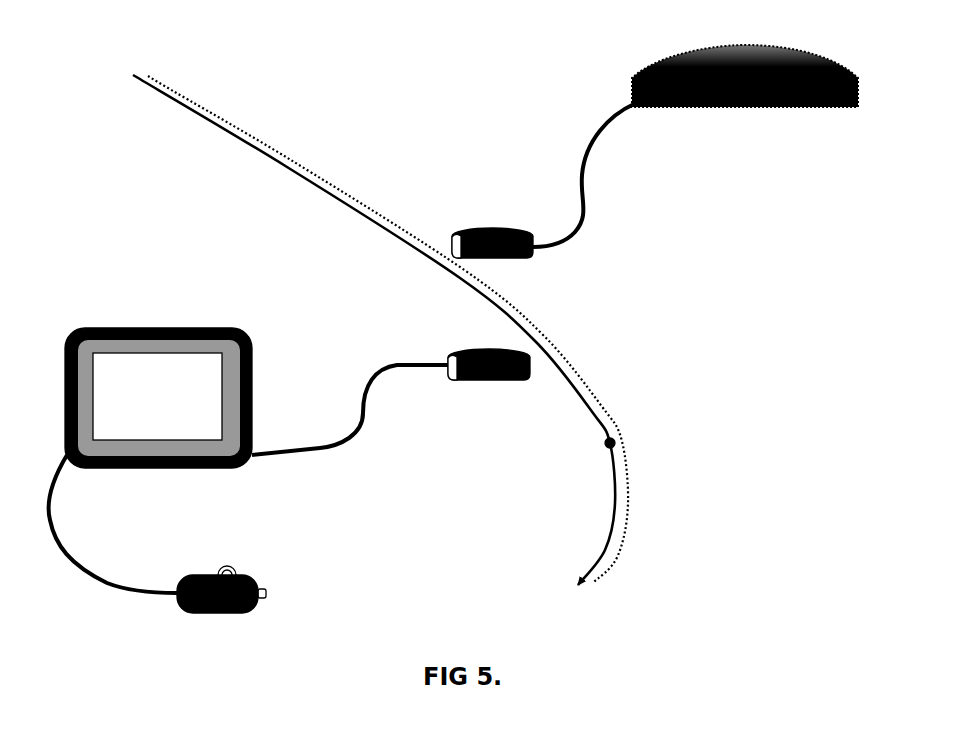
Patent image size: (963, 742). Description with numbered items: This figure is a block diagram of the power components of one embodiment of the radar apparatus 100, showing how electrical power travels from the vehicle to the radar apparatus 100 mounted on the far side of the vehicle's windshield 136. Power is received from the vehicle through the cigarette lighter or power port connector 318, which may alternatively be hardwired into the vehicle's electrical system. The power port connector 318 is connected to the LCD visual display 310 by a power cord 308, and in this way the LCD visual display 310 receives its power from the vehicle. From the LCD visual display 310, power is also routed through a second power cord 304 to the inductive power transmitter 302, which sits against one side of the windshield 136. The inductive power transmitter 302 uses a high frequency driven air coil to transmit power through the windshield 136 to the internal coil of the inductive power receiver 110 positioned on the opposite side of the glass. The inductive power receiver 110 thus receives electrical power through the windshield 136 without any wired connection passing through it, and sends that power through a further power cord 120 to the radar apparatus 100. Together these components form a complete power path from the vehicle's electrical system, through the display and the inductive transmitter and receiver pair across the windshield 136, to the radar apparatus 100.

The radar apparatus 100 is at (743, 47).
The inductive power receiver 110 is at (462, 225).
The power cord 120 is at (602, 128).
The windshield 136 is at (610, 443).
The inductive power transmitter 302 is at (445, 355).
The power cord 304 is at (370, 417).
The power cord 308 is at (70, 558).
The LCD visual display 310 is at (157, 328).
The power port connector 318 is at (273, 593).